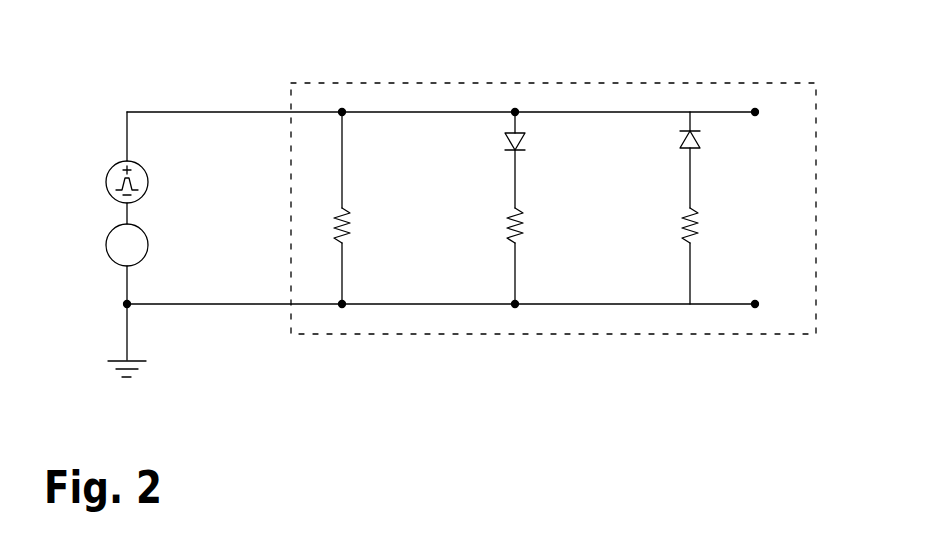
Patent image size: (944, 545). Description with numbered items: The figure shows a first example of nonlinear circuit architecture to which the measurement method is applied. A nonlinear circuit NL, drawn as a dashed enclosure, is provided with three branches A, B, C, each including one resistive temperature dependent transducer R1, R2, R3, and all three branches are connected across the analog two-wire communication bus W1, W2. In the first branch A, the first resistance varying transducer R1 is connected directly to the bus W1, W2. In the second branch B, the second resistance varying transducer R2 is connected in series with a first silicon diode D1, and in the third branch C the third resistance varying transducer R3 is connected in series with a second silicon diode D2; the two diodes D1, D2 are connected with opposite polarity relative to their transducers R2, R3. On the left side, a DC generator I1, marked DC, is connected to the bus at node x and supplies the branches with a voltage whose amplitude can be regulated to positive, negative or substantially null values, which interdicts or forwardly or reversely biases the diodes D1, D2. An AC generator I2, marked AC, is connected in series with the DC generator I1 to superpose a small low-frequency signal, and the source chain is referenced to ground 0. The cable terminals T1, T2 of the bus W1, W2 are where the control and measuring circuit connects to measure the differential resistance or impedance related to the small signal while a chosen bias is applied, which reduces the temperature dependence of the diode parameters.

The node x is at (201, 95).
The DC generator I1 is at (133, 172).
The DC source label DC is at (164, 183).
The AC generator I2 is at (133, 255).
The AC source label AC is at (164, 246).
The analog two-wire bus W1 is at (246, 154).
The analog two-wire bus W2 is at (246, 266).
The ground 0 is at (132, 373).
The nonlinear circuit NL is at (828, 235).
The first resistance varying transducer R1 is at (326, 208).
The first branch A is at (357, 193).
The first silicon diode D1 is at (497, 160).
The second resistance varying transducer R2 is at (496, 256).
The second branch B is at (529, 193).
The second silicon diode D2 is at (672, 160).
The third resistance varying transducer R3 is at (671, 256).
The third branch C is at (702, 194).
The cable terminal T1 is at (753, 127).
The cable terminal T2 is at (753, 293).